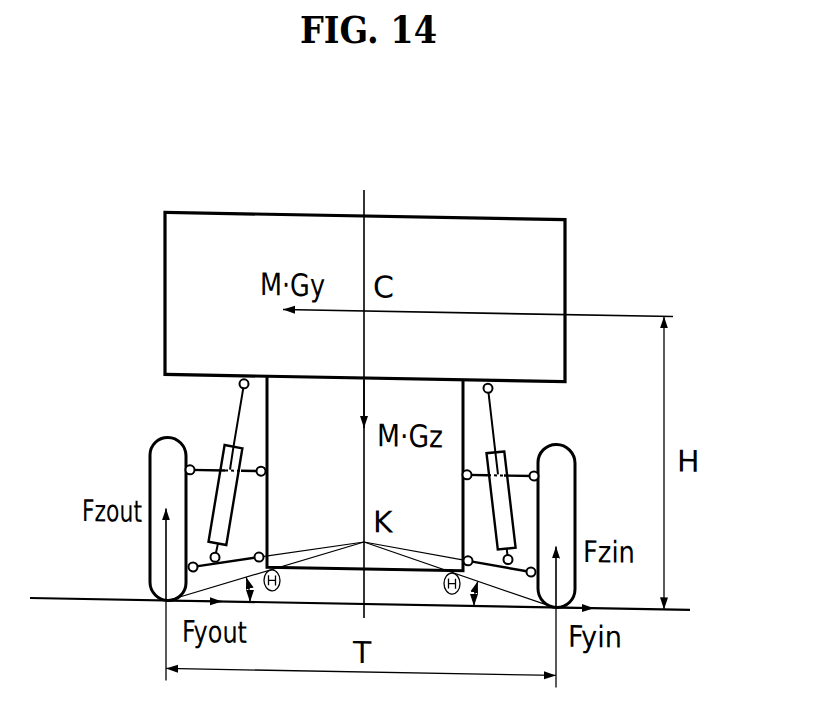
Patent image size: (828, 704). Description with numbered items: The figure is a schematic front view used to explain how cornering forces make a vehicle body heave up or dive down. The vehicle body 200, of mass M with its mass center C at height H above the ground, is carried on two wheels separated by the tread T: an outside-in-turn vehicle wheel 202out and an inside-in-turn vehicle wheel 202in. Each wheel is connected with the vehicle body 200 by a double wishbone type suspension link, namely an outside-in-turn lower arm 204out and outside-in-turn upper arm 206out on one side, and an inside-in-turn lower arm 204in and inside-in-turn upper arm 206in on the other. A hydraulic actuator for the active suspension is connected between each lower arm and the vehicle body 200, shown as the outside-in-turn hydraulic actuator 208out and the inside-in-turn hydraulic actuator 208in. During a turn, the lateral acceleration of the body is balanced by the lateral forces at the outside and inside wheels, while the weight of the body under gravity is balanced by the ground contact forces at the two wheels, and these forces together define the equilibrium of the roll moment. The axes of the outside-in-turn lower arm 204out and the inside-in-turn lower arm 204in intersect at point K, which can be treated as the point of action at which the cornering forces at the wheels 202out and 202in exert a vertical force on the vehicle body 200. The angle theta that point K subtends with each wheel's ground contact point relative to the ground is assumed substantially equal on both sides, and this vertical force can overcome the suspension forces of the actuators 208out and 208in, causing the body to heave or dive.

The vehicle body 200 is at (565, 237).
The outside-in-turn vehicle wheel 202out is at (150, 466).
The inside-in-turn vehicle wheel 202in is at (575, 454).
The outside-in-turn lower arm 204out is at (240, 556).
The inside-in-turn lower arm 204in is at (490, 567).
The outside-in-turn upper arm 206out is at (258, 470).
The inside-in-turn upper arm 206in is at (468, 476).
The outside-in-turn hydraulic actuator 208out is at (233, 428).
The inside-in-turn hydraulic actuator 208in is at (493, 411).